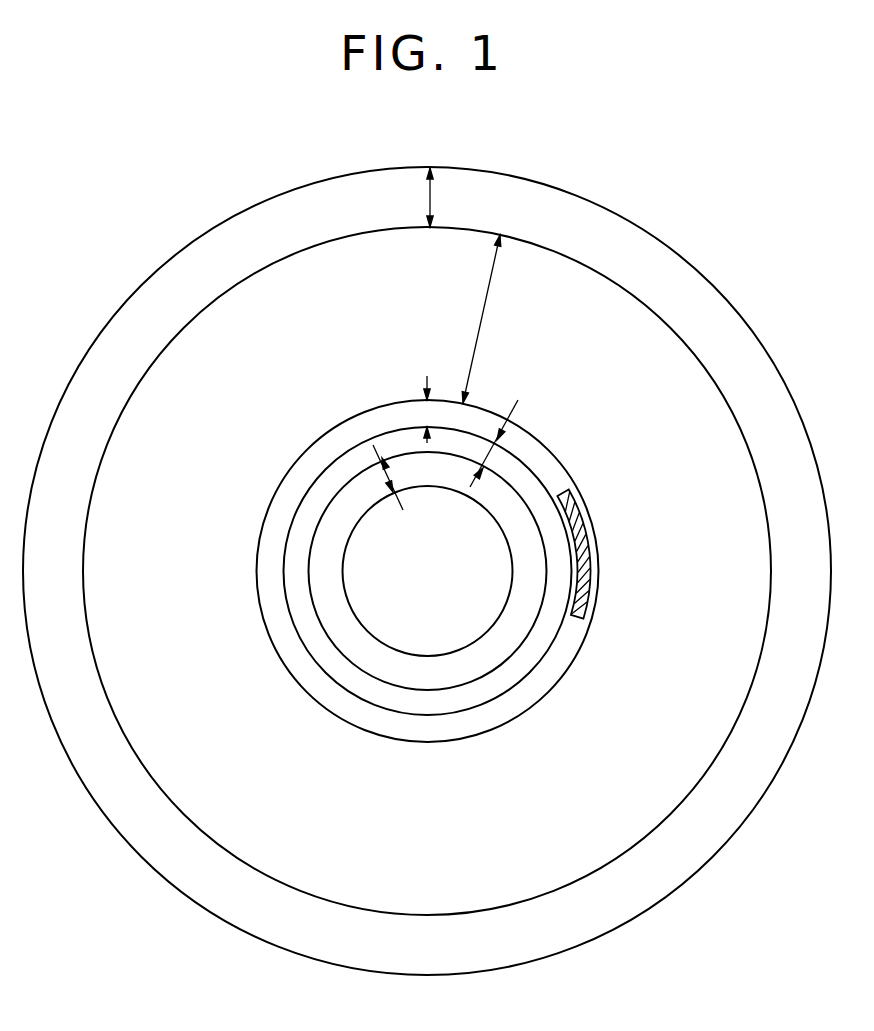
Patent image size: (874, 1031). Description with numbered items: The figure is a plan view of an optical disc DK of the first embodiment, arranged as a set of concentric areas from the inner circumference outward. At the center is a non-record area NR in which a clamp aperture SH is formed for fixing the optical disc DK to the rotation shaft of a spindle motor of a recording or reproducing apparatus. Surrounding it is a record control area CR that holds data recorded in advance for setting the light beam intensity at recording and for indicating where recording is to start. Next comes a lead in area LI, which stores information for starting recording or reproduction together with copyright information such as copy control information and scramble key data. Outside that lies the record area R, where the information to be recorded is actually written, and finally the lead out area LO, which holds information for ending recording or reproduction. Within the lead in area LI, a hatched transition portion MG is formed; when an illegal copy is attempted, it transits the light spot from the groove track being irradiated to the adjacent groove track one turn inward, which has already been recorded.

The optical disc DK is at (636, 194).
The lead out area LO is at (432, 193).
The record area R is at (486, 319).
The lead in area LI is at (428, 546).
The record control area CR is at (428, 555).
The non-record area NR is at (399, 506).
The clamp aperture SH is at (453, 564).
The transition portion MG is at (586, 541).